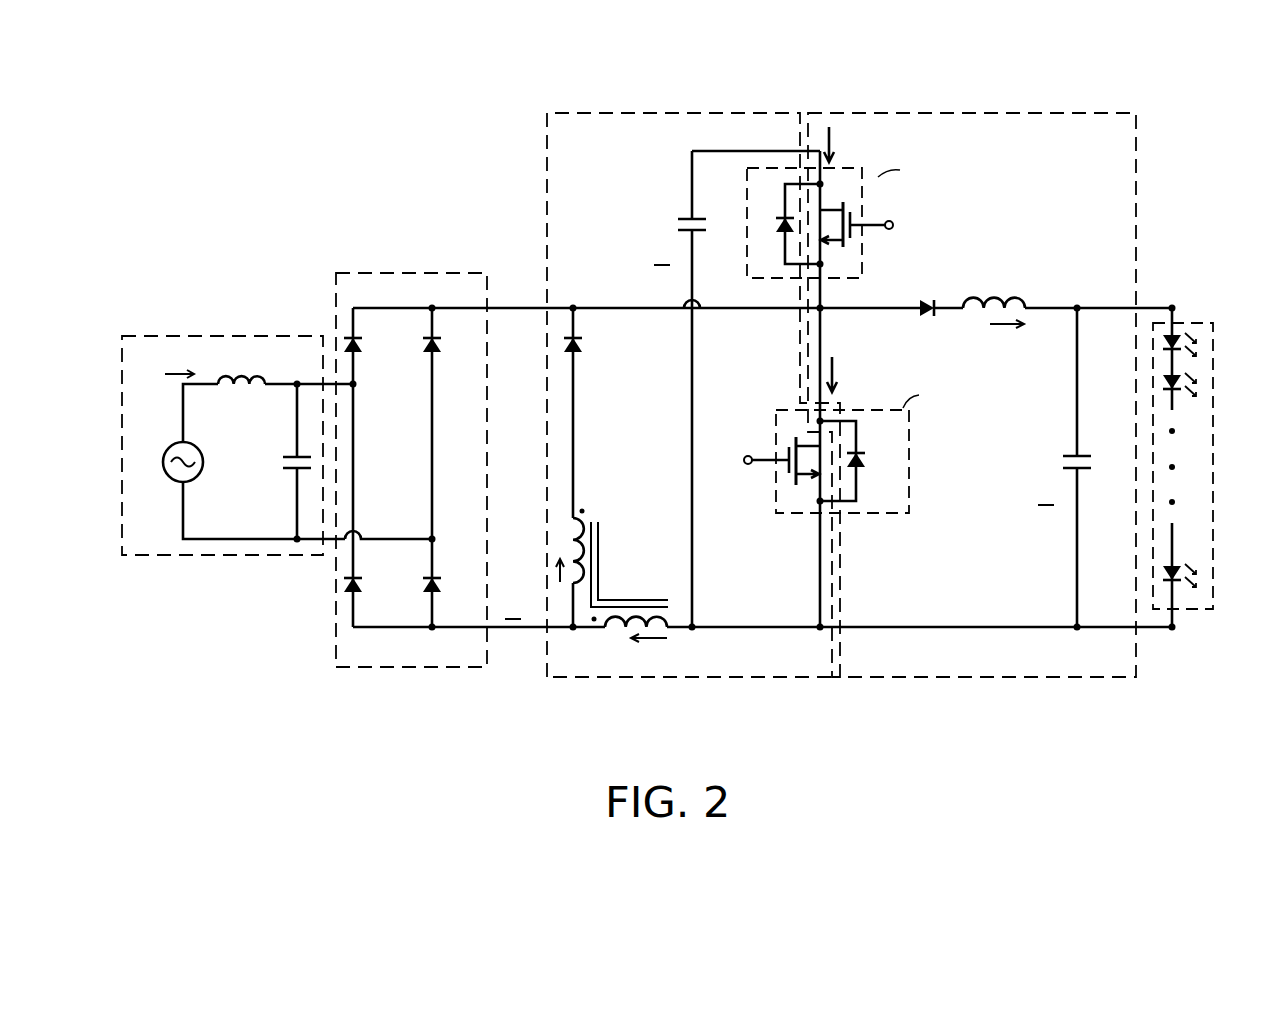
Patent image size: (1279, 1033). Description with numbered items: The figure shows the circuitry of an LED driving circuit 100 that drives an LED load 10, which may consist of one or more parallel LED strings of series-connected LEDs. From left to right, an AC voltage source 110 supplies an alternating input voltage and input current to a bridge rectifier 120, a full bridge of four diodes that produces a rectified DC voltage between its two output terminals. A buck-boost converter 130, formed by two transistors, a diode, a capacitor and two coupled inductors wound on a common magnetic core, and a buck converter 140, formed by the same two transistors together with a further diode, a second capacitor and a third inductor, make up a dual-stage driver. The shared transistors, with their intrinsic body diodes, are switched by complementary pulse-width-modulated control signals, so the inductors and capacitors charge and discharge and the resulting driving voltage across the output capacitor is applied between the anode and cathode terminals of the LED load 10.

The LED driving circuit 100 is at (700, 408).
The AC voltage source 110 is at (227, 334).
The bridge rectifier 120 is at (400, 272).
The buck-boost converter 130 is at (678, 112).
The buck converter 140 is at (1011, 111).
The LED load 10 is at (1214, 329).